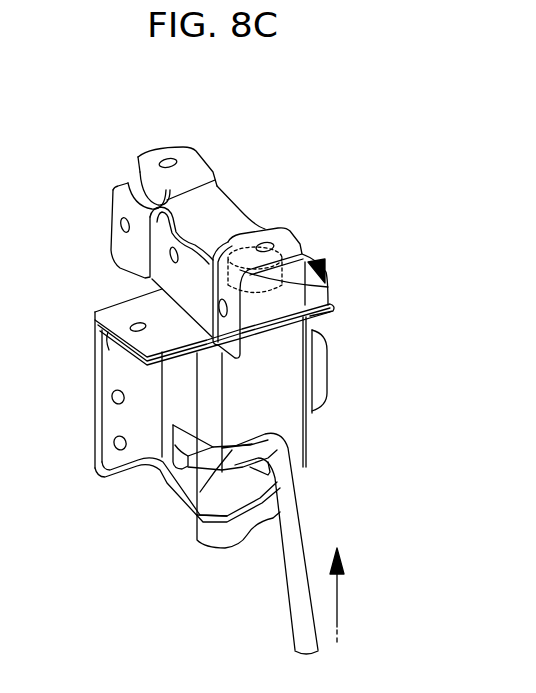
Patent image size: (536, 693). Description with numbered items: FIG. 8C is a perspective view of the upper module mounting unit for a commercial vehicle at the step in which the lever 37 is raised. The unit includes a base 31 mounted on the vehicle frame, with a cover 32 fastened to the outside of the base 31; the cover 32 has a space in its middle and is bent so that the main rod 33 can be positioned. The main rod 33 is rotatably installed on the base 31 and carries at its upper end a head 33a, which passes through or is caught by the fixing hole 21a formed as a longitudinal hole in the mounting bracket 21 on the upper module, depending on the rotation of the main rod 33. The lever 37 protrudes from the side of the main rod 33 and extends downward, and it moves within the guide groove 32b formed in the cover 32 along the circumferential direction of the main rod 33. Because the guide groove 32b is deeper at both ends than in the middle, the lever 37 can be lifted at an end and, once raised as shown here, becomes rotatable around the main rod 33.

The mounting bracket 21 is at (218, 222).
The fixing hole 21a is at (268, 290).
The base 31 is at (143, 308).
The cover 32 is at (265, 402).
The guide groove 32b is at (278, 449).
The main rod 33 is at (162, 505).
The head 33a is at (328, 287).
The lever 37 is at (297, 573).